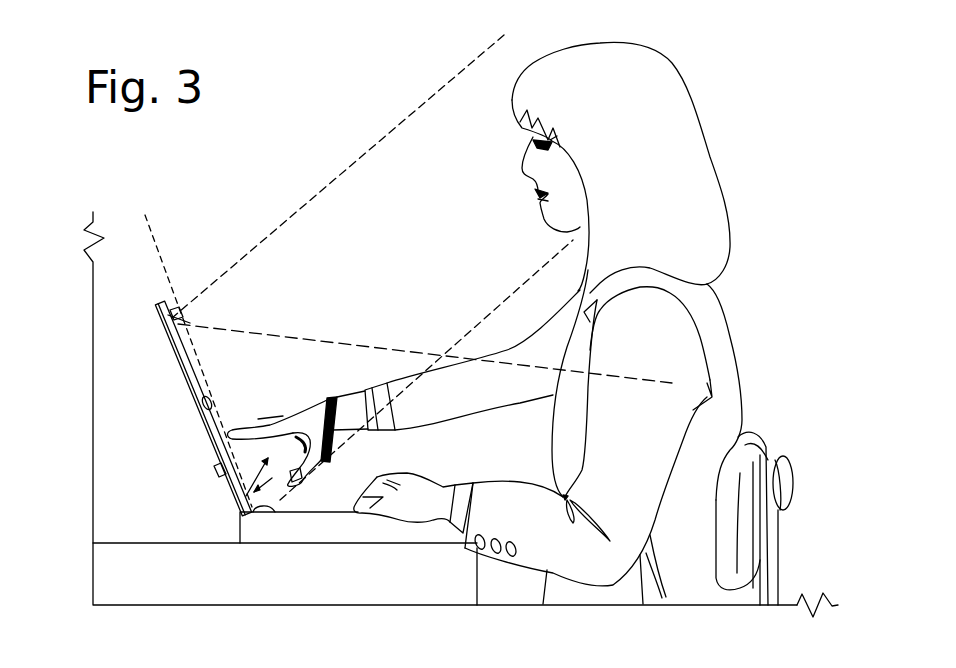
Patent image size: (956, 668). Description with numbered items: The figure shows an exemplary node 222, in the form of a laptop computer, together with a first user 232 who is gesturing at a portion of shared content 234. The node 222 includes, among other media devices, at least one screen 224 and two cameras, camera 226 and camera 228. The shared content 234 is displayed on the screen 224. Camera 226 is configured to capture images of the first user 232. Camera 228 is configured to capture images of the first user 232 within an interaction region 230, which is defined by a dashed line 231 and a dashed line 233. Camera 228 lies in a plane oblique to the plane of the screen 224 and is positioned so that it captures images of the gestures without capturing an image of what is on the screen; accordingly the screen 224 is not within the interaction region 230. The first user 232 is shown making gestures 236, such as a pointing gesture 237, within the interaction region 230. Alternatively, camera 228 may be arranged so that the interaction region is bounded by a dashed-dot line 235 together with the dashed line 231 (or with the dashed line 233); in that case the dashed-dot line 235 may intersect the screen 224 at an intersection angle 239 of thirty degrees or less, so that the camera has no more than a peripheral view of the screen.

The node 222 is at (143, 480).
The screen 224 is at (178, 345).
The camera 226 is at (179, 312).
The camera 228 is at (268, 514).
The interaction region 230 is at (244, 499).
The dashed line 231 is at (530, 280).
The first user 232 is at (720, 337).
The dashed line 233 is at (147, 216).
The shared content 234 is at (210, 408).
The dashed-dot line 235 is at (213, 467).
The gestures 236 is at (328, 362).
The pointing gesture 237 is at (270, 427).
The intersection angle 239 is at (250, 507).